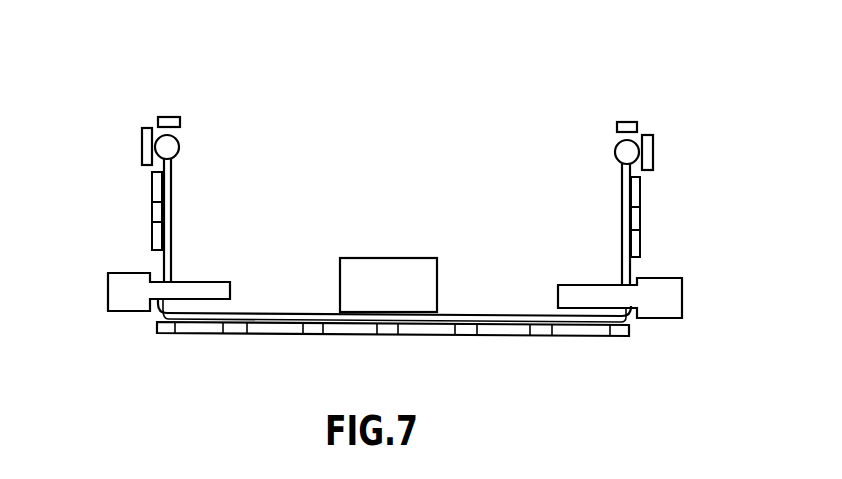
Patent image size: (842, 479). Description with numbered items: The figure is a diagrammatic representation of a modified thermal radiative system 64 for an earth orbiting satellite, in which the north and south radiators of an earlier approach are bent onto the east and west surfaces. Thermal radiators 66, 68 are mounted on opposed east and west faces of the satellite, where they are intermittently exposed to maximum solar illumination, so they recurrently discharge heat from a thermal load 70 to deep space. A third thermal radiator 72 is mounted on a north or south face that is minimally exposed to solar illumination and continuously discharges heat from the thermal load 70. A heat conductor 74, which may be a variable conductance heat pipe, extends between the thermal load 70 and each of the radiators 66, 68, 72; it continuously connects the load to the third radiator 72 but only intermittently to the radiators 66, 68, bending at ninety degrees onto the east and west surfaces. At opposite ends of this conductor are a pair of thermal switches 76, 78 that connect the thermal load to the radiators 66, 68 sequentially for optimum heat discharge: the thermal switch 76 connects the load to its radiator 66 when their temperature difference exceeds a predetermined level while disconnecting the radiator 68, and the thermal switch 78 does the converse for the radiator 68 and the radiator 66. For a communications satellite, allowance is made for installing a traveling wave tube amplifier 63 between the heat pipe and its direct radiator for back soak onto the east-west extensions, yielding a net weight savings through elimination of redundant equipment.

The thermal radiative system 64 is at (108, 87).
The TWTA 63 is at (123, 312).
The thermal radiator 66 is at (152, 222).
The thermal radiator 68 is at (642, 232).
The thermal load 70 is at (372, 297).
The third thermal radiator 72 is at (352, 337).
The heat conductor 74 is at (307, 300).
The thermal switch 76 is at (195, 147).
The thermal switch 78 is at (603, 152).